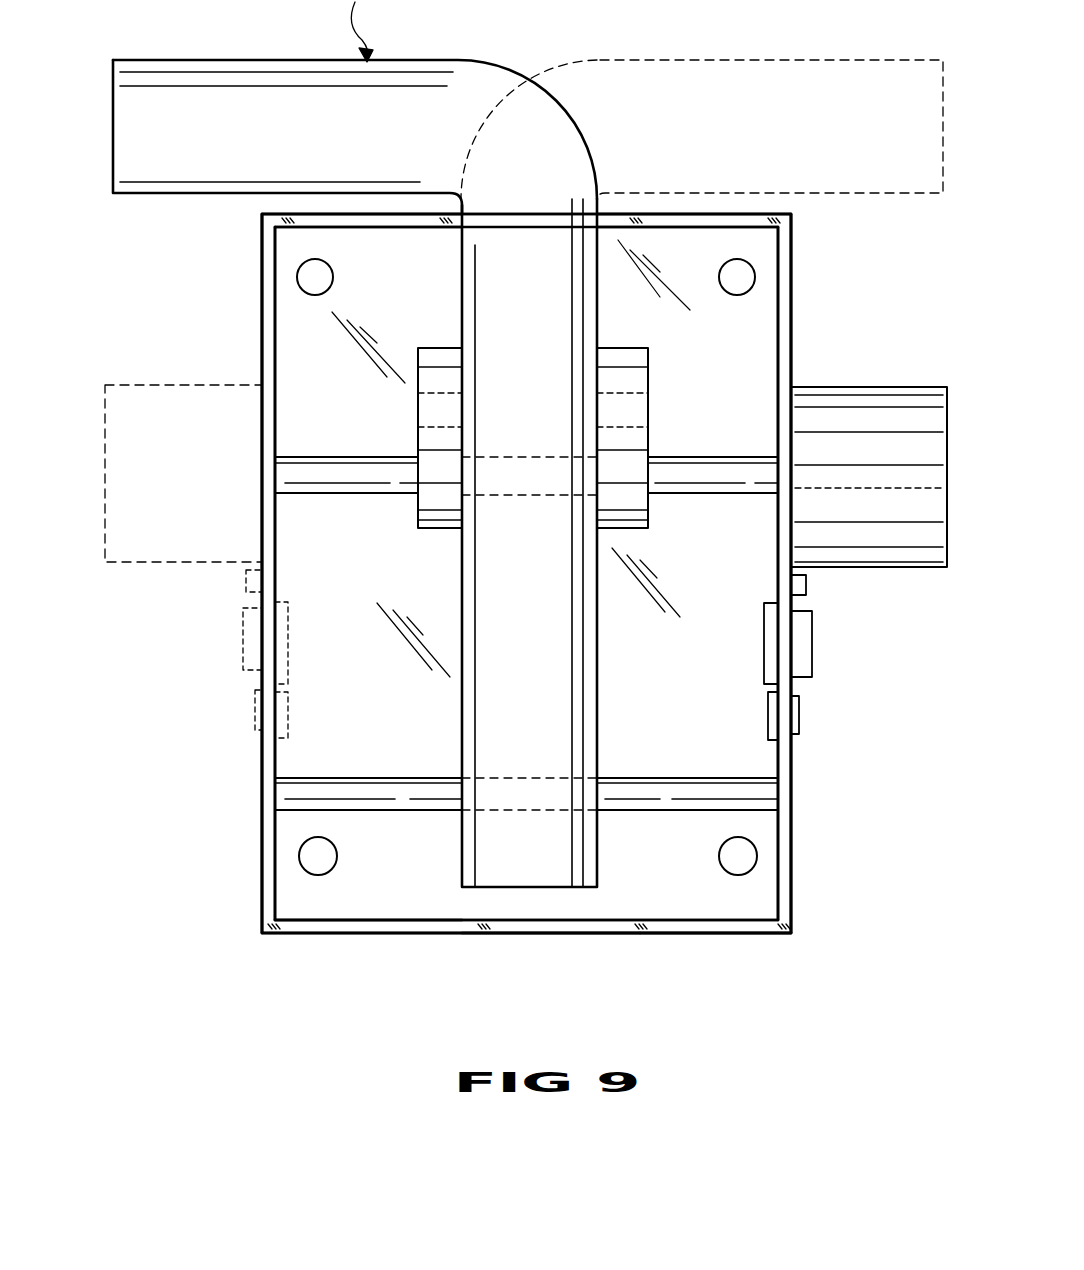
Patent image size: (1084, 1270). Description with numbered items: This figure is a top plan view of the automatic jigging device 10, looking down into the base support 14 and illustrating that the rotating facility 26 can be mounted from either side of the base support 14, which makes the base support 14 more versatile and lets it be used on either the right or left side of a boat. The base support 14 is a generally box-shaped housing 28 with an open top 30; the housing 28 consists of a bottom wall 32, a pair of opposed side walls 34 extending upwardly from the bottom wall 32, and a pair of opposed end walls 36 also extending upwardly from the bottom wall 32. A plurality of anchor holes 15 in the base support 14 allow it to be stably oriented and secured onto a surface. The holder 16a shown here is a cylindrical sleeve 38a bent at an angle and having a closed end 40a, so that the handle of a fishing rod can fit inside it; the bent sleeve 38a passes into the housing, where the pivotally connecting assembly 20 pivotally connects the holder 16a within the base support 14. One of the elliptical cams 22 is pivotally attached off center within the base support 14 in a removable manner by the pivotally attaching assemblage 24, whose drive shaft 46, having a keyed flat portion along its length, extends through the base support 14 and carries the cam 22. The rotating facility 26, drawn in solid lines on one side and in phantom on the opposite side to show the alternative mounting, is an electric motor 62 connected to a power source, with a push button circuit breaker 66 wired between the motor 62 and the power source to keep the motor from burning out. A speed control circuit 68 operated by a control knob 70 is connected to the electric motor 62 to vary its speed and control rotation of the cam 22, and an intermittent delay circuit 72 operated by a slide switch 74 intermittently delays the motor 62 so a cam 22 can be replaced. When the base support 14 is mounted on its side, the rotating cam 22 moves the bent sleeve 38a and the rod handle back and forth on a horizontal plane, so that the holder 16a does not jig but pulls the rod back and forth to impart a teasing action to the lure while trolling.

The automatic jigging device 10 is at (182, 872).
The base support 14 is at (672, 935).
The anchor holes 15 is at (330, 282).
The holder 16a is at (758, 62).
The pivotally connecting assembly 20 is at (390, 778).
The elliptical cams 22 is at (640, 357).
The pivotally attaching assemblage 24 is at (340, 458).
The rotating facility 26 is at (872, 387).
The box-shaped housing 28 is at (803, 870).
The open top 30 is at (542, 940).
The bottom wall 32 is at (395, 912).
The side walls 34 is at (264, 250).
The end walls 36 is at (690, 213).
The bent cylindrical sleeve 38a is at (226, 95).
The closed end 40a is at (552, 888).
The drive shaft 46 is at (730, 463).
The electric motor 62 is at (210, 385).
The push button circuit breaker 66 is at (806, 585).
The speed control circuit 68 is at (764, 643).
The control knob 70 is at (812, 645).
The intermittent delay circuit 72 is at (768, 712).
The slide switch 74 is at (799, 718).